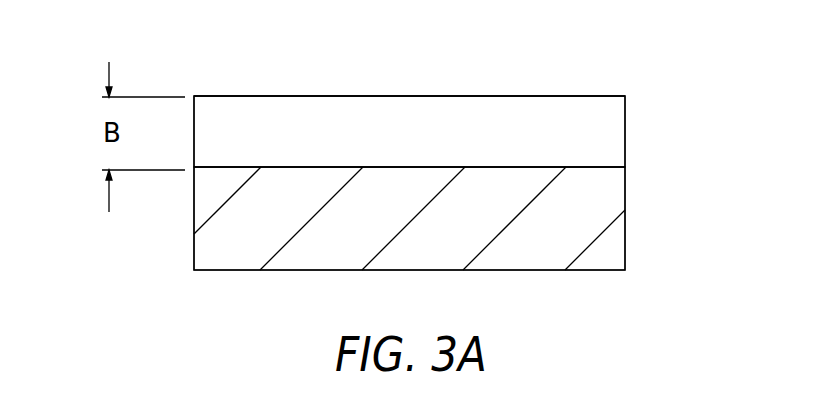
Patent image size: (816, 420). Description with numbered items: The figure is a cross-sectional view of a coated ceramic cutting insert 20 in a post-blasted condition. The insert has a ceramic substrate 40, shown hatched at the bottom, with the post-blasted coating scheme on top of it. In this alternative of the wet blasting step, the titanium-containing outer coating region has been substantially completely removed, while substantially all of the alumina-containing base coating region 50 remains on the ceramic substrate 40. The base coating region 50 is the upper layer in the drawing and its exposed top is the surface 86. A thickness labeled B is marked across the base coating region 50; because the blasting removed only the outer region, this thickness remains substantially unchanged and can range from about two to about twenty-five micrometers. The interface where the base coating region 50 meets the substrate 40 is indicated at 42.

The coated ceramic cutting insert 20 is at (257, 70).
The alumina-containing base coating region 50 is at (647, 96).
The surface 86 is at (522, 95).
The interface 42 is at (587, 167).
The ceramic substrate 40 is at (602, 262).